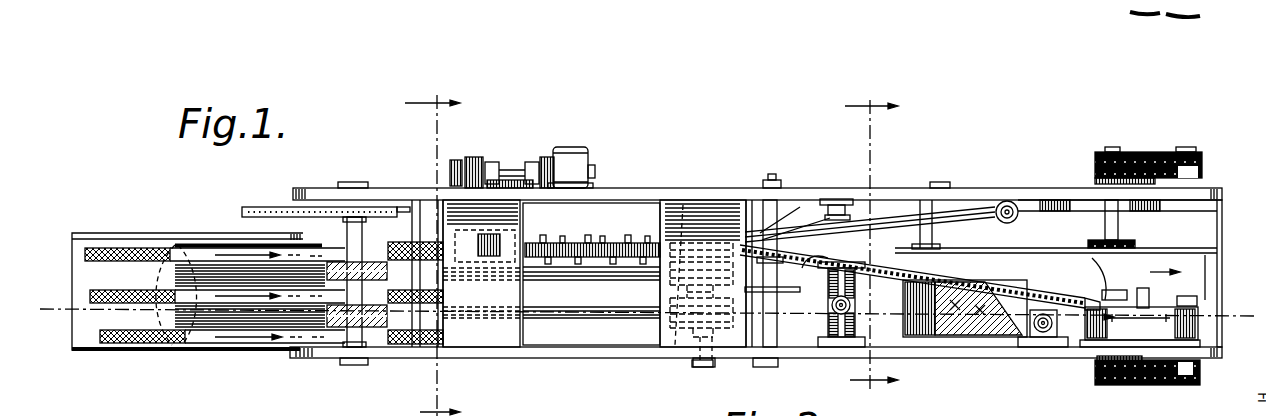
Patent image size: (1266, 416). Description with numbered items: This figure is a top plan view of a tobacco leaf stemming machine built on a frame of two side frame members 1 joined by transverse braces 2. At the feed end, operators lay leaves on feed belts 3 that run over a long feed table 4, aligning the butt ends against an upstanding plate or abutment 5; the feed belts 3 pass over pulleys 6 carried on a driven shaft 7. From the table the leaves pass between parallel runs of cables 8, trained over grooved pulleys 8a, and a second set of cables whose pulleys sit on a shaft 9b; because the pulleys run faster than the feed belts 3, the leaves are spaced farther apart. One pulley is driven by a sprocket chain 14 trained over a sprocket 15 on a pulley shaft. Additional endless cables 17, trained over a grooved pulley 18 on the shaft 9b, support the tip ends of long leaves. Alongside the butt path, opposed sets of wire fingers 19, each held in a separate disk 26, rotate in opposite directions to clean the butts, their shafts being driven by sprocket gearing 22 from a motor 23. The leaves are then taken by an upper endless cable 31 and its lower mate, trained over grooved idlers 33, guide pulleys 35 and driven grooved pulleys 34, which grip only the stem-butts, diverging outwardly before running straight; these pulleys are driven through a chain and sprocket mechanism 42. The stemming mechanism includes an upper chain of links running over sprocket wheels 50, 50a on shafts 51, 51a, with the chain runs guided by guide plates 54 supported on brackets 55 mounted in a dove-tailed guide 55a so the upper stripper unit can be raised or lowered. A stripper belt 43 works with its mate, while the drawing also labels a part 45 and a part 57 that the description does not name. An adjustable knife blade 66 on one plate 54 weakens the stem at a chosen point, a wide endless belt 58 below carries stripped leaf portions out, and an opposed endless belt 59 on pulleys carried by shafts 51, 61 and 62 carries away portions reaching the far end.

The side frame members 1 is at (635, 199).
The transverse braces 2 is at (737, 341).
The feed belts 3 is at (181, 368).
The feed table 4 is at (93, 349).
The upstanding plate or abutment 5 is at (134, 231).
The pulleys 6 is at (384, 376).
The shaft 7 is at (416, 217).
The cables 8 is at (590, 277).
The grooved pulleys 8a is at (626, 319).
The shaft 9b is at (708, 376).
The sprocket chain 14 is at (268, 205).
The sprocket 15 is at (365, 212).
The endless cables 17 is at (567, 327).
The grooved pulley 18 is at (337, 325).
The wire fingers 19 is at (553, 240).
The sprocket gearing 22 is at (466, 162).
The motor 23 is at (580, 145).
The disk 26 is at (608, 241).
The upper endless cable 31 is at (943, 218).
The grooved idlers 33 is at (736, 194).
The grooved pulleys 34 is at (1174, 224).
The guide pulleys 35 is at (1018, 201).
The chain and sprocket mechanism 42 is at (1135, 147).
The stripper belt 43 is at (1013, 281).
The rail 45 is at (947, 270).
The sprocket wheel 50 is at (1082, 278).
The sprocket wheel 50a is at (796, 216).
The shaft 51 is at (1138, 274).
The shaft 51a is at (768, 212).
The guide plates 54 is at (893, 276).
The brackets 55 is at (838, 340).
The dove-tailed guide 55a is at (1040, 338).
The base 57 is at (1150, 382).
The endless belt 58 is at (998, 343).
The endless belt 59 is at (1140, 327).
The shaft 61 is at (1193, 300).
The shaft 62 is at (1160, 296).
The knife blade 66 is at (918, 262).